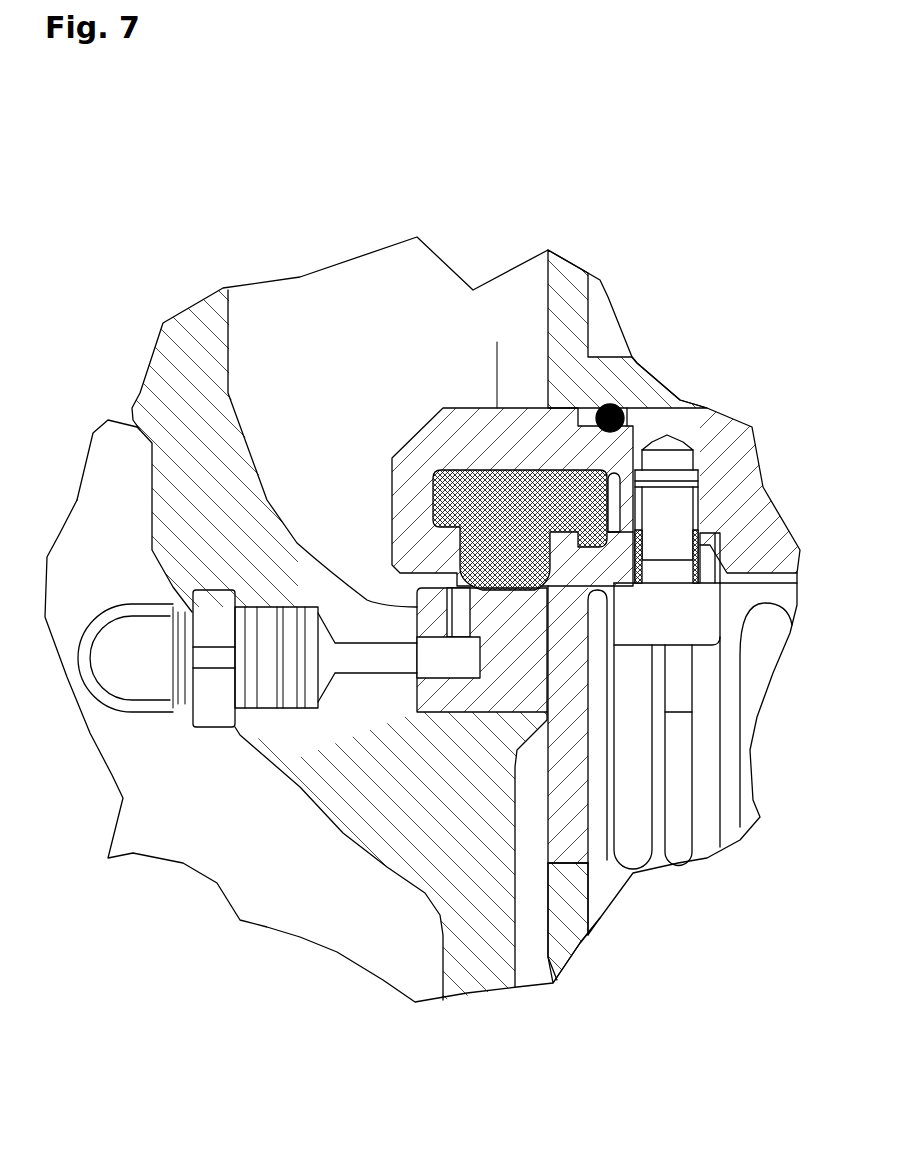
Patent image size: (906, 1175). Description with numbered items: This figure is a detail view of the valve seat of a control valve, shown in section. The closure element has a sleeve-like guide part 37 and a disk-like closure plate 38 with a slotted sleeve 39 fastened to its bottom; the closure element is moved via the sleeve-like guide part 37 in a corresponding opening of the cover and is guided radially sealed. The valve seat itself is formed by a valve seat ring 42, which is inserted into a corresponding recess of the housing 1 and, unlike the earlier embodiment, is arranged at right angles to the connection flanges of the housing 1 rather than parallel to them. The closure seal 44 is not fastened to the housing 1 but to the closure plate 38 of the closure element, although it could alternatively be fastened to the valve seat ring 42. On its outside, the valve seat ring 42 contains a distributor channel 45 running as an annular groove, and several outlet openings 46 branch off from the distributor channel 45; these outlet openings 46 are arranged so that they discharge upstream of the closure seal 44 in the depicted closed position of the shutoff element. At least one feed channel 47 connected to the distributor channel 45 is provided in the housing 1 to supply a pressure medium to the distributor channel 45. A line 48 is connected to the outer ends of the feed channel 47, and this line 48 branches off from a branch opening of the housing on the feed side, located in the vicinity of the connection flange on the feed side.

The housing 1 is at (300, 847).
The sleeve-like guide part 37 is at (565, 290).
The closure plate 38 is at (452, 430).
The slotted sleeve 39 is at (578, 922).
The valve seat ring 42 is at (512, 643).
The closure seal 44 is at (477, 512).
The distributor channel 45 is at (458, 665).
The outlet openings 46 is at (459, 620).
The feed channel 47 is at (377, 657).
The line 48 is at (98, 620).